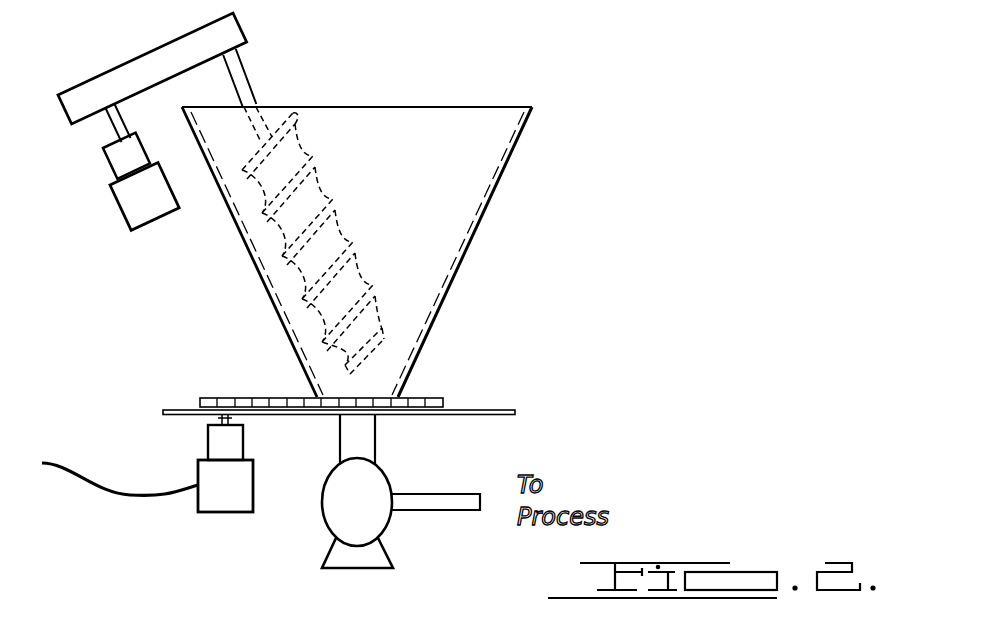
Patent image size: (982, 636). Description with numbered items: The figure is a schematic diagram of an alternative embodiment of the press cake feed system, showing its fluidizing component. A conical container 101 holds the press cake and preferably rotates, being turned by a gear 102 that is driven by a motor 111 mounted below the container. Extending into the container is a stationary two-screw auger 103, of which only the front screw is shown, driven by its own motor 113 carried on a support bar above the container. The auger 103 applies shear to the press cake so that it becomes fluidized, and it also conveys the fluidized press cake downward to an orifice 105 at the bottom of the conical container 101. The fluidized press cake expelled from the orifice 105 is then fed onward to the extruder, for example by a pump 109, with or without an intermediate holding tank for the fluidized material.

The conical container 101 is at (493, 190).
The gear 102 is at (200, 400).
The two-screw auger 103 is at (135, 68).
The orifice 105 is at (377, 450).
The pump 109 is at (388, 528).
The motor 111 is at (225, 507).
The motor 113 is at (132, 203).